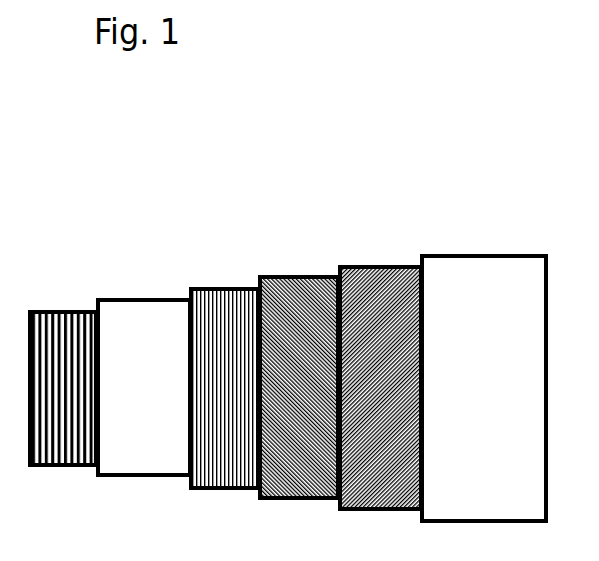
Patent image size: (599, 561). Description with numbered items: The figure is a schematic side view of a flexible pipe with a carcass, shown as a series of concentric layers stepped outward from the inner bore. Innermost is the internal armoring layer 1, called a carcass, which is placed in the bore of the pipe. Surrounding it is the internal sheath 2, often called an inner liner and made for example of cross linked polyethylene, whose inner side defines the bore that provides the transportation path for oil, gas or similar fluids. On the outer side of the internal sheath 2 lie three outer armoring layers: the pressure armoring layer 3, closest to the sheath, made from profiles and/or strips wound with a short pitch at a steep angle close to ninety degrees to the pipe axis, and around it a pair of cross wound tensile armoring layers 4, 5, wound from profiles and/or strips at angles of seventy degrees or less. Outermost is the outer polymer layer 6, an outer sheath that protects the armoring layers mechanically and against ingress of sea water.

The internal armoring layer 1 is at (54, 288).
The internal sheath 2 is at (145, 277).
The pressure armoring layer 3 is at (238, 275).
The tensile armoring layer 4 is at (307, 253).
The tensile armoring layer 5 is at (387, 252).
The outer polymer layer 6 is at (503, 222).